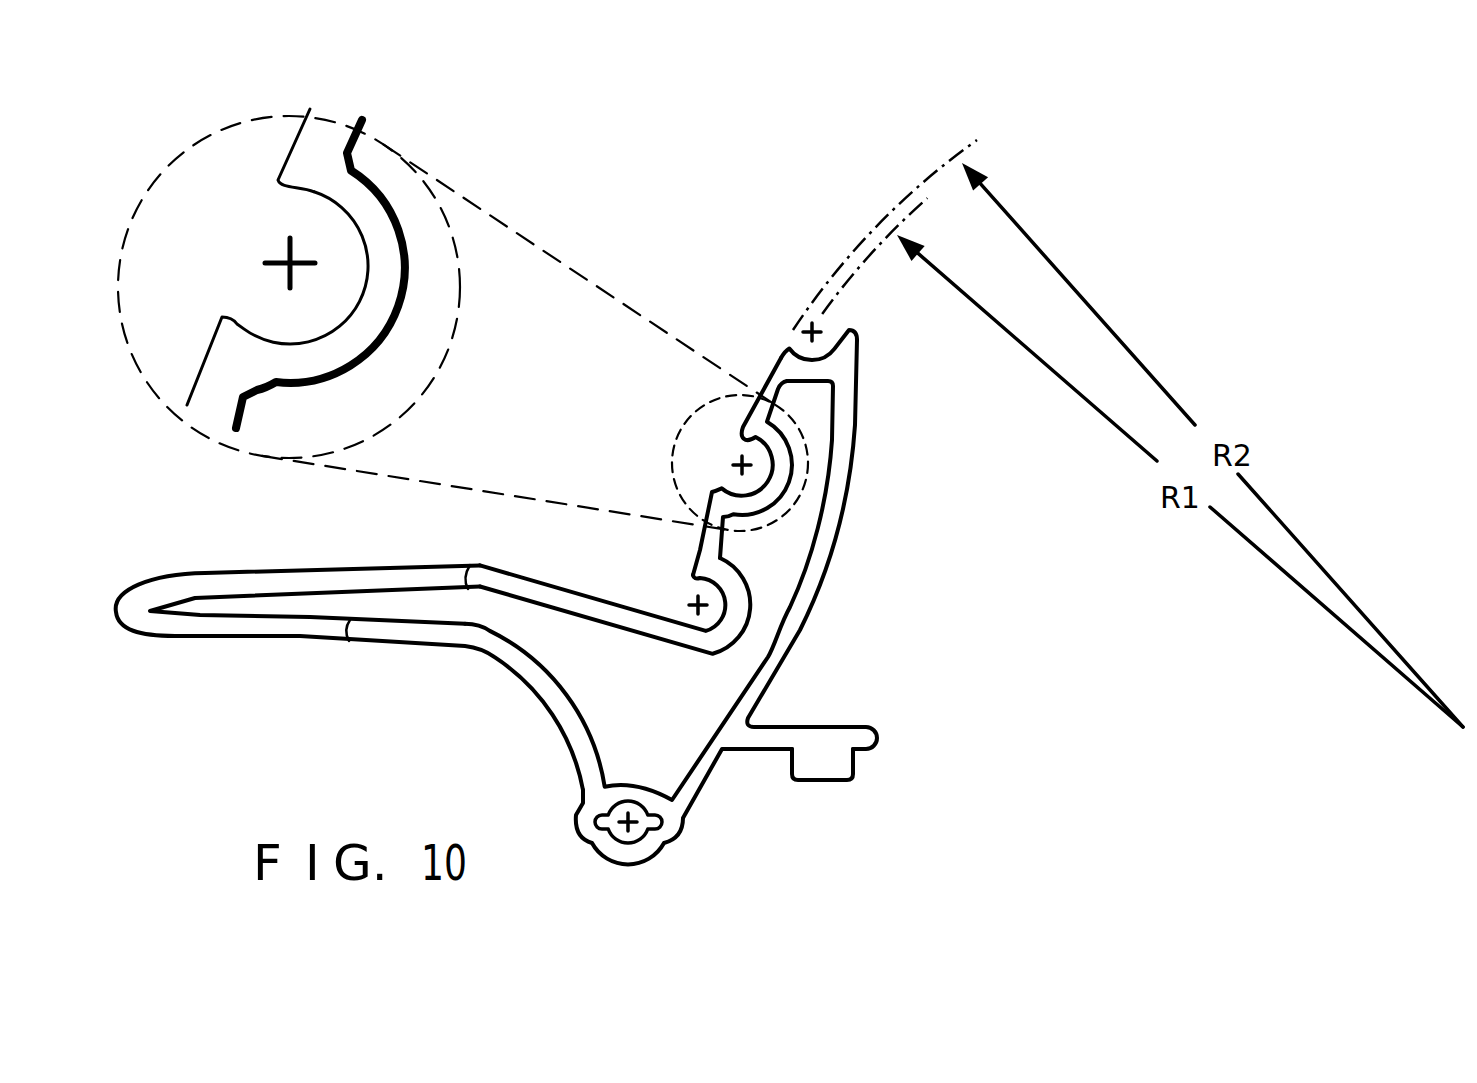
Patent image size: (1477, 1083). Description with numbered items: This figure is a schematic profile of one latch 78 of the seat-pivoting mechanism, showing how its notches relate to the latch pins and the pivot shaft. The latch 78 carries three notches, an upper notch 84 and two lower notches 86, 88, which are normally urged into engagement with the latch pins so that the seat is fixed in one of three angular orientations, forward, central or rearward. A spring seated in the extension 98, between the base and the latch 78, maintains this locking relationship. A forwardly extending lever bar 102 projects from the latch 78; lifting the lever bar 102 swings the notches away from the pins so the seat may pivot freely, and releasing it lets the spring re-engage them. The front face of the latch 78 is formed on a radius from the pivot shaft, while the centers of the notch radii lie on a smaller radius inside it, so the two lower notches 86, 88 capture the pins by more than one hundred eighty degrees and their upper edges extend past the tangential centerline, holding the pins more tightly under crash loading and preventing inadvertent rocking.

The latch 78 is at (796, 595).
The notch 84 is at (805, 352).
The notch 86 is at (737, 434).
The notch 88 is at (700, 586).
The extension 98 is at (841, 769).
The lever bar 102 is at (208, 587).